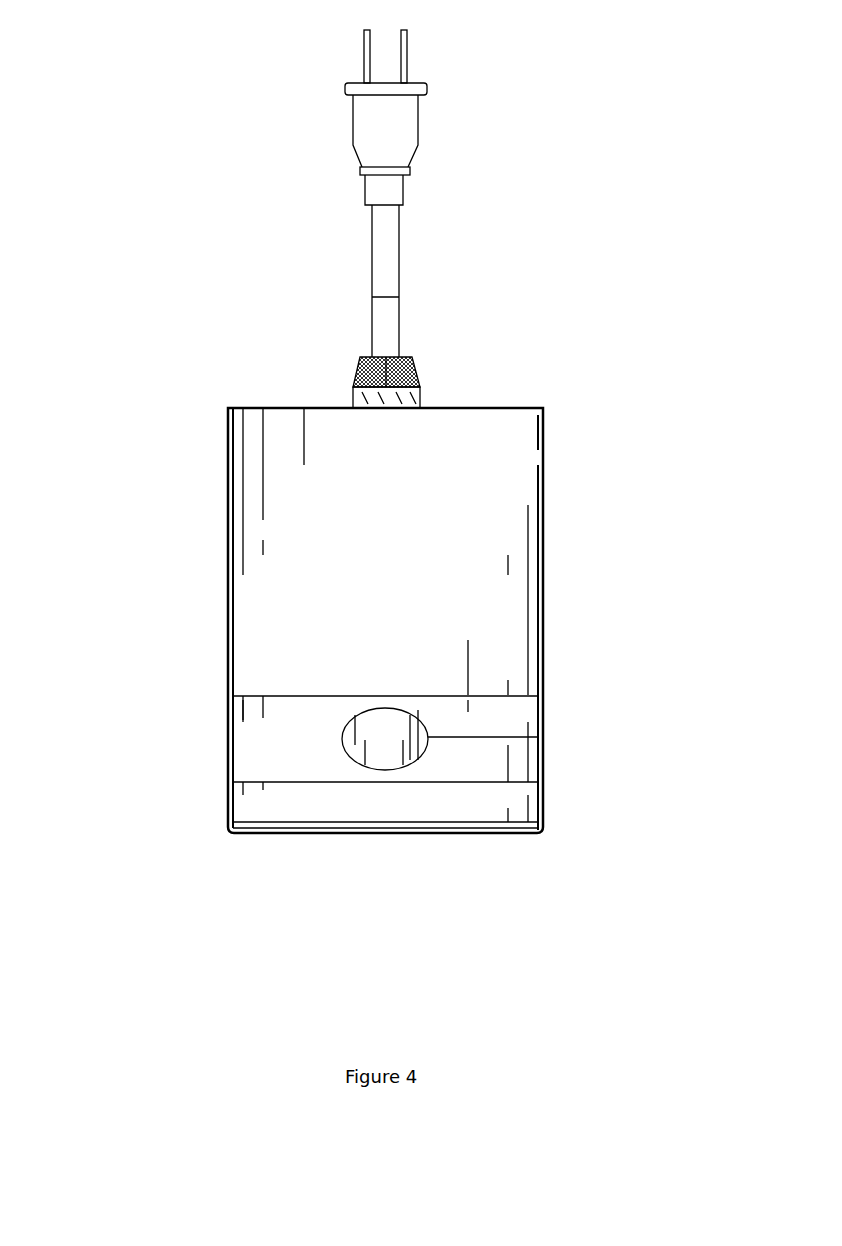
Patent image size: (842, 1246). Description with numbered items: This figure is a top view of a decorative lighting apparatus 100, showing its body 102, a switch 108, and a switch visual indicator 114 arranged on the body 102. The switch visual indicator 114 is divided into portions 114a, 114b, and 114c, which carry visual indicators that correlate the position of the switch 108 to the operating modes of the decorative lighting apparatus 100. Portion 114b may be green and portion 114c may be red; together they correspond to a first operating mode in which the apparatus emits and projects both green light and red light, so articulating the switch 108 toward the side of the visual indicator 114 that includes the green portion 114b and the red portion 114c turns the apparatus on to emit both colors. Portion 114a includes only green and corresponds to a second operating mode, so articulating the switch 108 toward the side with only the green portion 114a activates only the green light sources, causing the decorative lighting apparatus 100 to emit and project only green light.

The decorative lighting apparatus 100 is at (692, 291).
The body 102 is at (483, 551).
The switch 108 is at (370, 735).
The switch visual indicator 114 is at (260, 740).
The portion 114a is at (298, 750).
The portion 114b is at (458, 760).
The portion 114c is at (502, 711).